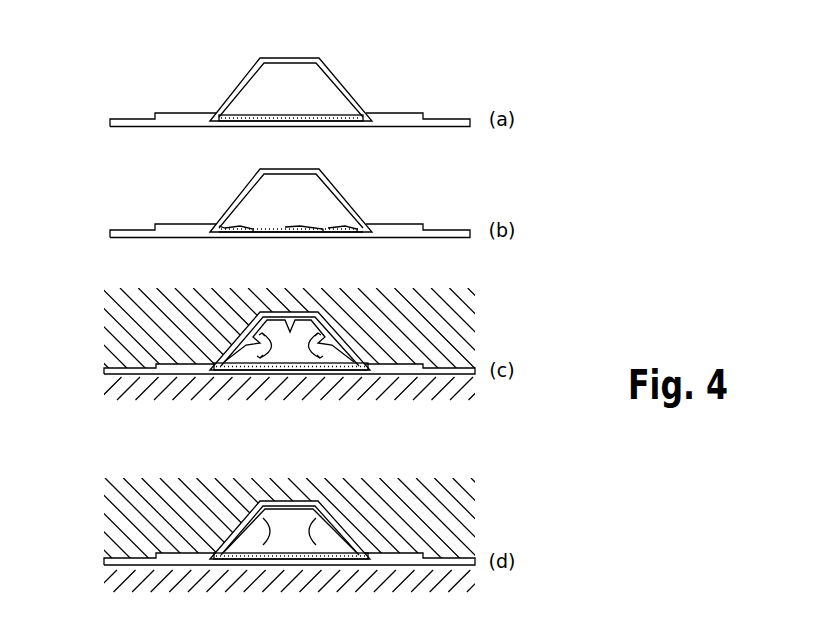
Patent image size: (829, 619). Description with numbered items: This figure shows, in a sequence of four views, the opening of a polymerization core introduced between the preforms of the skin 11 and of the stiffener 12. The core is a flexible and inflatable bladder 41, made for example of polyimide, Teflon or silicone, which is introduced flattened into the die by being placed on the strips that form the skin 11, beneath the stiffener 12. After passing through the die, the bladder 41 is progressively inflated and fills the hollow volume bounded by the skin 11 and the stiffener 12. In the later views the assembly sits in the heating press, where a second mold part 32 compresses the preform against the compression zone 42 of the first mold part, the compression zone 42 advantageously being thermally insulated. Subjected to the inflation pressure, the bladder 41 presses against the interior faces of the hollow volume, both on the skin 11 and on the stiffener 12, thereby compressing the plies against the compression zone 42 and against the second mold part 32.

The skin 11 is at (133, 118).
The stiffener 12 is at (361, 84).
The flexible and inflatable bladder 41 is at (268, 115).
The second mold part 32 is at (130, 327).
The compression zone 42 is at (425, 398).